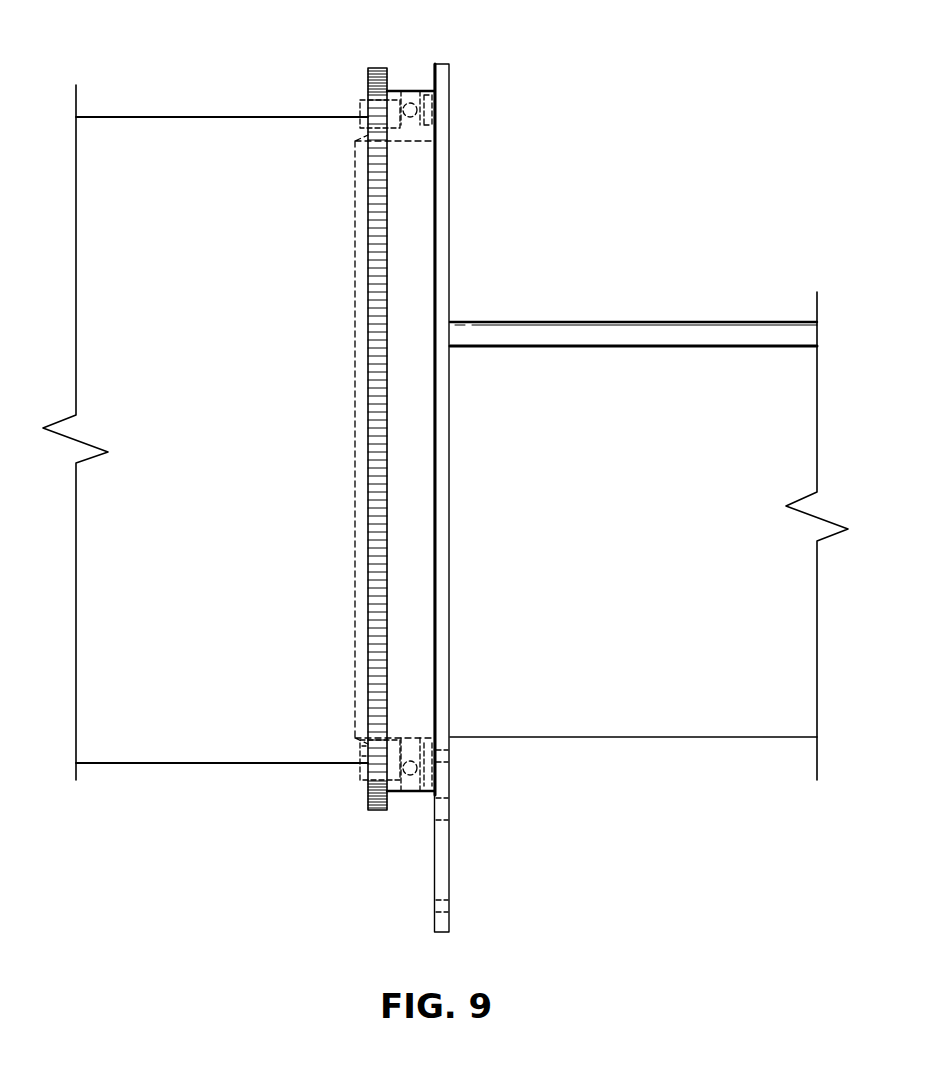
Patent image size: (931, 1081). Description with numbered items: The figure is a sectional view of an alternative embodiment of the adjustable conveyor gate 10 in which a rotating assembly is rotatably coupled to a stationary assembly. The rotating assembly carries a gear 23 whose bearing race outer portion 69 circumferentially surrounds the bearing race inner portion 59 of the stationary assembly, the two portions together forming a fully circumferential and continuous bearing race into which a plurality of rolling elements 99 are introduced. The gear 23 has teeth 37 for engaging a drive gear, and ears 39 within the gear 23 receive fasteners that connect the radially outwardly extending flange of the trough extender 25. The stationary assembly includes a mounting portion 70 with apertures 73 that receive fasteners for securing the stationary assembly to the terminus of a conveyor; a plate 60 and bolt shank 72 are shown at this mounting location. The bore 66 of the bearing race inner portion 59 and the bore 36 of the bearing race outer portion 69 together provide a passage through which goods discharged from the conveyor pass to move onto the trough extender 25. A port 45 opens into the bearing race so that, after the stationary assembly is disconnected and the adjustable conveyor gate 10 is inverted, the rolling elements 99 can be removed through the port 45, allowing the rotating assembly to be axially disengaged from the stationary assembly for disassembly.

The adjustable conveyor gate 10 is at (204, 852).
The gear 23 is at (369, 256).
The trough extender 25 is at (147, 763).
The bore 36 is at (501, 461).
The teeth 37 is at (376, 812).
The ears 39 is at (370, 110).
The port 45 is at (427, 96).
The bearing race inner portion 59 is at (420, 128).
The plate 60 is at (452, 252).
The bore 66 is at (501, 551).
The bearing race outer portion 69 is at (405, 96).
The mounting portion 70 is at (450, 806).
The bolt shank 72 is at (450, 843).
The apertures 73 is at (443, 897).
The rolling elements 99 is at (368, 752).